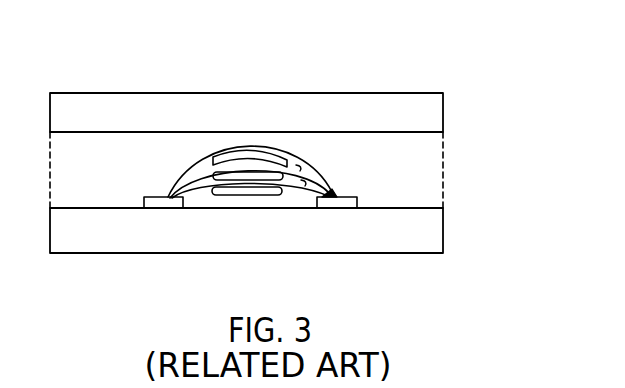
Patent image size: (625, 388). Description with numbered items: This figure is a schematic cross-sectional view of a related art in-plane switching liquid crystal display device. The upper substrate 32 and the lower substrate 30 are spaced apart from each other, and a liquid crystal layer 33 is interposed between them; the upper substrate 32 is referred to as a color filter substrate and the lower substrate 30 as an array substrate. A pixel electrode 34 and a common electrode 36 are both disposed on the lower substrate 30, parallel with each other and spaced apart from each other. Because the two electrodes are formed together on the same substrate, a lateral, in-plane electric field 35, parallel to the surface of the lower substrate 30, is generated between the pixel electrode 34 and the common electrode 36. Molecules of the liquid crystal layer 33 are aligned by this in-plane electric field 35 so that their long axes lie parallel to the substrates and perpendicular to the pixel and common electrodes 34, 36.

The lower substrate 30 is at (444, 208).
The upper substrate 32 is at (444, 93).
The liquid crystal layer 33 is at (253, 195).
The pixel electrode 34 is at (155, 208).
The in-plane electric field 35 is at (310, 163).
The common electrode 36 is at (331, 208).